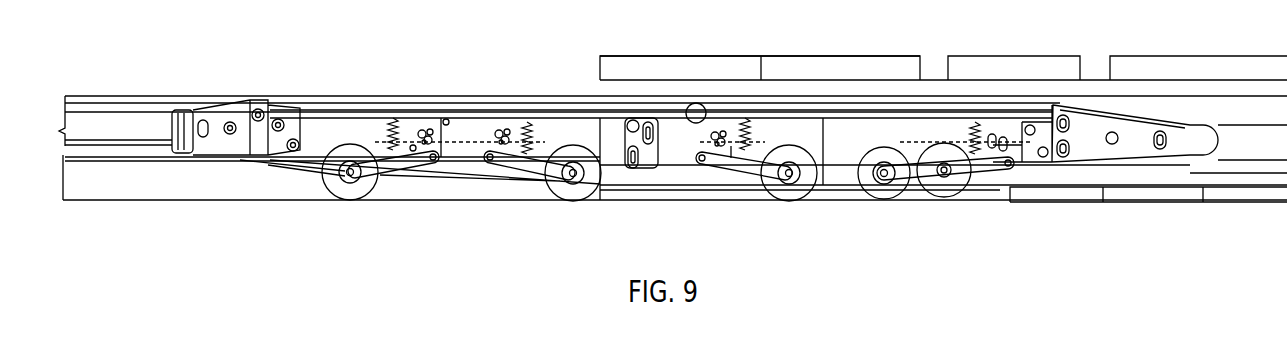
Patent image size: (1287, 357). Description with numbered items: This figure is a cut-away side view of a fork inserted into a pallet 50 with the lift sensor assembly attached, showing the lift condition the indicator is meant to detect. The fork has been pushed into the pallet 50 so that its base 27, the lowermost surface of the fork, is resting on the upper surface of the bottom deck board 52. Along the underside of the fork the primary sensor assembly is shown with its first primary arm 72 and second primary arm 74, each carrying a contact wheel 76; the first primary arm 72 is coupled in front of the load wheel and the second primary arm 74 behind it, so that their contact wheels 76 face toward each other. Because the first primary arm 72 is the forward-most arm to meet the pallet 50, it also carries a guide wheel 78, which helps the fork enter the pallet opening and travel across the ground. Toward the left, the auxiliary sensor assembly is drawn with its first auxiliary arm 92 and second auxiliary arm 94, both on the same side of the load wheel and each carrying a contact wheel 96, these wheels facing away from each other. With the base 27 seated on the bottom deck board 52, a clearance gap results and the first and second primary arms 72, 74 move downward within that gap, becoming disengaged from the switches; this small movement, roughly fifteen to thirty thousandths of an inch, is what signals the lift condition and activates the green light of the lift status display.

The pallet 50 is at (1023, 56).
The contact wheel 96 is at (345, 200).
The second auxiliary arm 94 is at (415, 165).
The first auxiliary arm 92 is at (508, 163).
The bottom deck board 52 is at (647, 198).
The base 27 is at (717, 190).
The second primary arm 74 is at (735, 174).
The contact wheel 76 is at (862, 199).
The guide wheel 78 is at (948, 197).
The first primary arm 72 is at (988, 169).